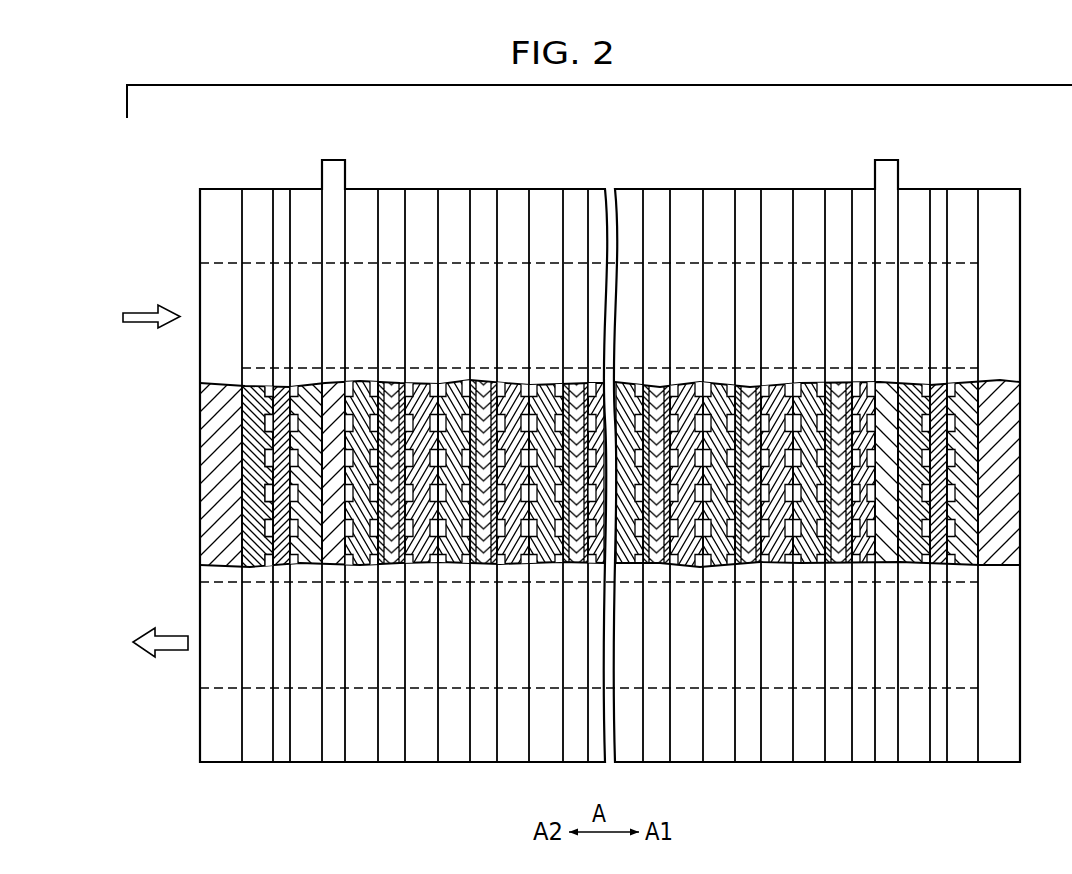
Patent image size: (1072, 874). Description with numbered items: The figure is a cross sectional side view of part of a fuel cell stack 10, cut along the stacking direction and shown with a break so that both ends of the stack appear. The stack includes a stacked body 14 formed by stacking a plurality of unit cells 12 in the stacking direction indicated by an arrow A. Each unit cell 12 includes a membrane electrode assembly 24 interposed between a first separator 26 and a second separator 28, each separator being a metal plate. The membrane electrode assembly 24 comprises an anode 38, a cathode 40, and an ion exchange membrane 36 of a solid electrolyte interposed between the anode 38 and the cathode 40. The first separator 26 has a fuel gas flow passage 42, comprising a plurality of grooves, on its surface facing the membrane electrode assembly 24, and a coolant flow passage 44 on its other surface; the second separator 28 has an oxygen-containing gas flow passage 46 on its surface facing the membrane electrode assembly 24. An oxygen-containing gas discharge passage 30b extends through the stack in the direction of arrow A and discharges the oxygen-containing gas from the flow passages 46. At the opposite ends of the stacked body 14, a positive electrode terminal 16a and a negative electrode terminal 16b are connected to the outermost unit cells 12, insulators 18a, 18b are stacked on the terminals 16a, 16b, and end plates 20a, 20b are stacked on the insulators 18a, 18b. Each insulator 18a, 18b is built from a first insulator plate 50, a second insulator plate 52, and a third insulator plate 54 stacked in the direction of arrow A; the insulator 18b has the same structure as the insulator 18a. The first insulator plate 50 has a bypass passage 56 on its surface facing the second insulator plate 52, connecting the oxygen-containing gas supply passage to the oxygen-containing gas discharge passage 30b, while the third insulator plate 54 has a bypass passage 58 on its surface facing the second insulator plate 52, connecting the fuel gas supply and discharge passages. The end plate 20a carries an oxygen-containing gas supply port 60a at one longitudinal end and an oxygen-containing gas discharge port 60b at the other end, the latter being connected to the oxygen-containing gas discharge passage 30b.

The fuel cell stack 10 is at (561, 131).
The unit cell 12 is at (573, 505).
The stacked body 14 is at (735, 140).
The positive electrode terminal 16a is at (333, 165).
The negative electrode terminal 16b is at (890, 163).
The insulator 18a is at (270, 772).
The insulator 18b is at (930, 772).
The end plate 20a is at (214, 197).
The end plate 20b is at (1007, 197).
The membrane electrode assembly 24 is at (399, 767).
The first separator 26 is at (372, 767).
The second separator 28 is at (436, 503).
The oxygen-containing gas discharge passage 30b is at (287, 690).
The ion exchange membrane 36 is at (840, 527).
The anode 38 is at (828, 495).
The cathode 40 is at (797, 425).
The fuel gas flow passage 42 is at (823, 565).
The coolant flow passage 44 is at (845, 397).
The oxygen-containing gas flow passage 46 is at (857, 457).
The first insulator plate 50 is at (258, 197).
The second insulator plate 52 is at (283, 197).
The third insulator plate 54 is at (301, 197).
The bypass passage 56 is at (267, 523).
The bypass passage 58 is at (267, 490).
The oxygen-containing gas supply port 60a is at (222, 270).
The oxygen-containing gas discharge port 60b is at (233, 590).